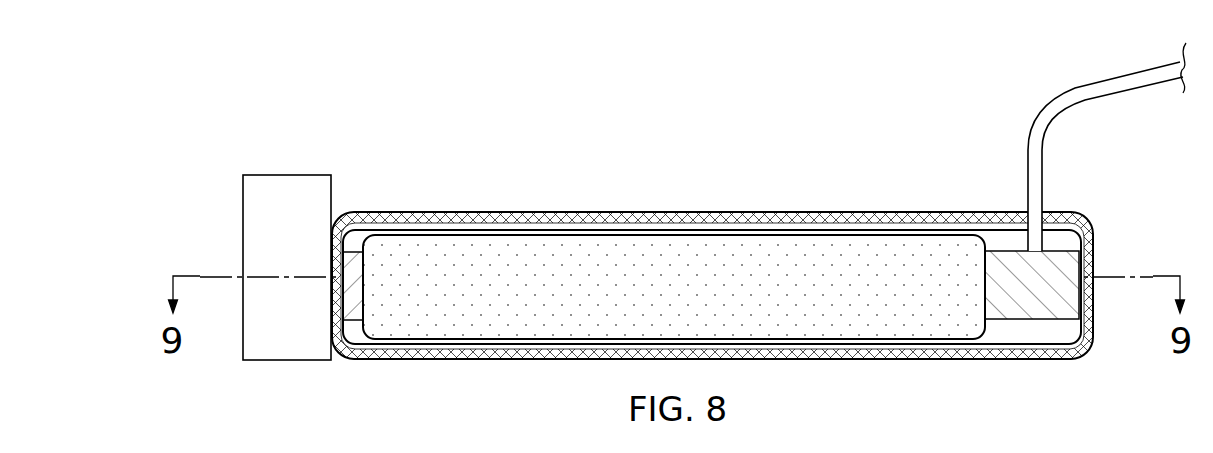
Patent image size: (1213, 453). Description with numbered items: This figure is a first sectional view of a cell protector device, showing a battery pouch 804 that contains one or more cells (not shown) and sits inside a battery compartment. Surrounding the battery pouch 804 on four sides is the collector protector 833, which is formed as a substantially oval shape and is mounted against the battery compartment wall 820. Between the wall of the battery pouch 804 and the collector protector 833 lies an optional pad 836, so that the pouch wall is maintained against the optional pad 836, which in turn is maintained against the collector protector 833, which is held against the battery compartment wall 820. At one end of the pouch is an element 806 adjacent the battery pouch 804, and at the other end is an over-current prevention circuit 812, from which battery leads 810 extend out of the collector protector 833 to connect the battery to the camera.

The battery compartment wall 820 is at (285, 175).
The collector protector 833 is at (648, 212).
The optional pad 836 is at (350, 322).
The battery pouch 804 is at (473, 235).
The end insert 806 is at (361, 251).
The over-current prevention circuit 812 is at (1070, 265).
The battery leads 810 is at (1103, 100).